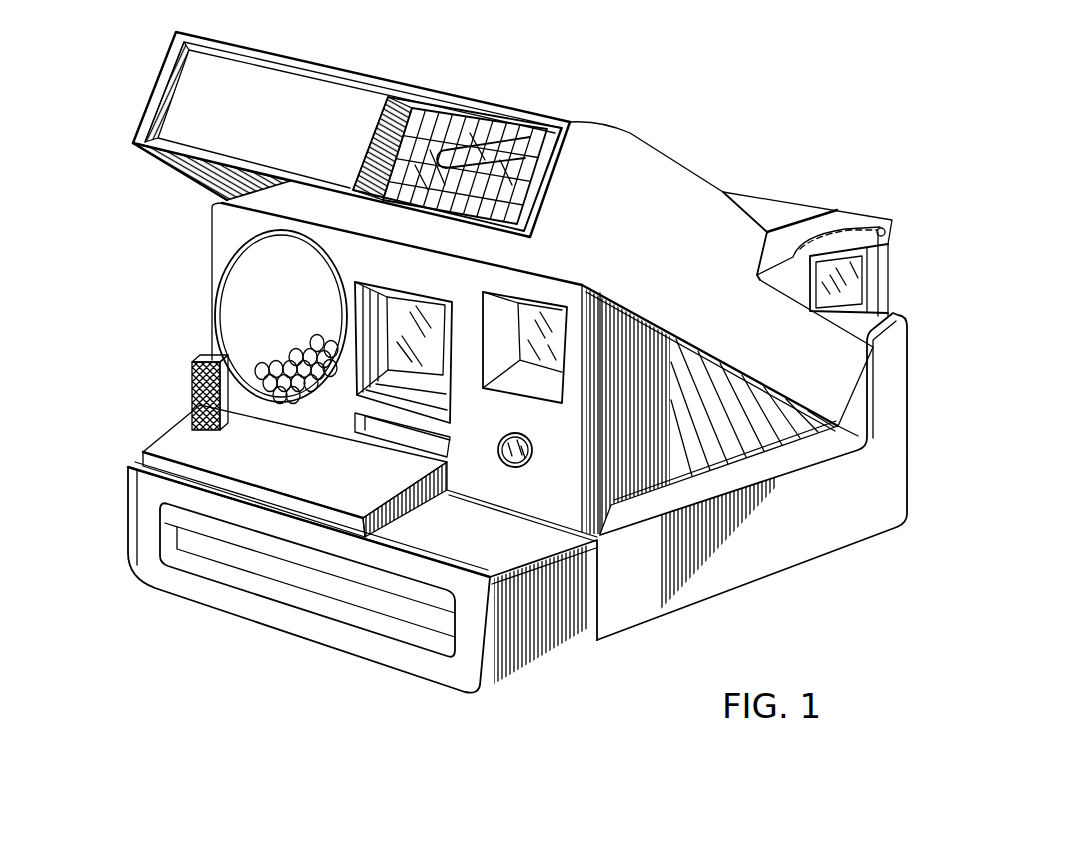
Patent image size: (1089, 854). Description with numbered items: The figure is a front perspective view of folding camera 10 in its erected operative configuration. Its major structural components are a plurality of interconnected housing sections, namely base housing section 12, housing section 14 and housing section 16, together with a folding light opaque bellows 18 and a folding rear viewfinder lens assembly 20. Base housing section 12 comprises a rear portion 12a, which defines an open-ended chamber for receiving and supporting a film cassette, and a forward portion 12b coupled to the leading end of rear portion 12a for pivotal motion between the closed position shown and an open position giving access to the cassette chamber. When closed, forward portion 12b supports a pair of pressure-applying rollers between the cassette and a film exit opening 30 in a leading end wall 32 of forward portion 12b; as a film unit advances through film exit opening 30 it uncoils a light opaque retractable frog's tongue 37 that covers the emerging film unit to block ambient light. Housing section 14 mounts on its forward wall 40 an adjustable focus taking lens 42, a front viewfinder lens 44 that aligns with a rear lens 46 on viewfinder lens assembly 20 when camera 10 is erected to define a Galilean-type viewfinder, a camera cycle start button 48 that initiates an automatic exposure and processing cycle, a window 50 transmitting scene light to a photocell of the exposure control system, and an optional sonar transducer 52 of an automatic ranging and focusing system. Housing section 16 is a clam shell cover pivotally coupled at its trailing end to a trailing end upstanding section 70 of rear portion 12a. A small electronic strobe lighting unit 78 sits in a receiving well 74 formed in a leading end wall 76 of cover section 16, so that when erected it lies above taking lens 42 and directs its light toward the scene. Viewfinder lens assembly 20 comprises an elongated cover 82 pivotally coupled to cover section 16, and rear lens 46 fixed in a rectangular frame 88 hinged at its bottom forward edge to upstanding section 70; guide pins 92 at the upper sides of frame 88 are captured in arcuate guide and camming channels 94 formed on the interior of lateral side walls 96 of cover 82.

The camera 10 is at (943, 172).
The base housing section 12 is at (908, 526).
The rear portion 12a is at (852, 537).
The forward portion 12b is at (537, 655).
The housing section 14 is at (580, 482).
The cover section 16 is at (579, 122).
The bellows 18 is at (742, 423).
The rear viewfinder lens assembly 20 is at (897, 234).
The film exit opening 30 is at (170, 549).
The leading end wall 32 is at (147, 498).
The frog's tongue 37 is at (263, 570).
The forward wall 40 is at (458, 284).
The taking lens 42 is at (400, 320).
The front viewfinder lens 44 is at (535, 358).
The rear viewfinder lens 46 is at (846, 278).
The camera cycle start button 48 is at (192, 404).
The window 50 is at (516, 466).
The sonar transducer 52 is at (256, 304).
The upstanding section 70 is at (899, 362).
The receiving well 74 is at (374, 158).
The leading end wall 76 is at (314, 90).
The electronic strobe lighting unit 78 is at (462, 138).
The cover 82 is at (751, 197).
The rectangular frame 88 is at (883, 258).
The guide pins 92 is at (883, 227).
The guide and camming channels 94 is at (844, 233).
The lateral side walls 96 is at (780, 242).